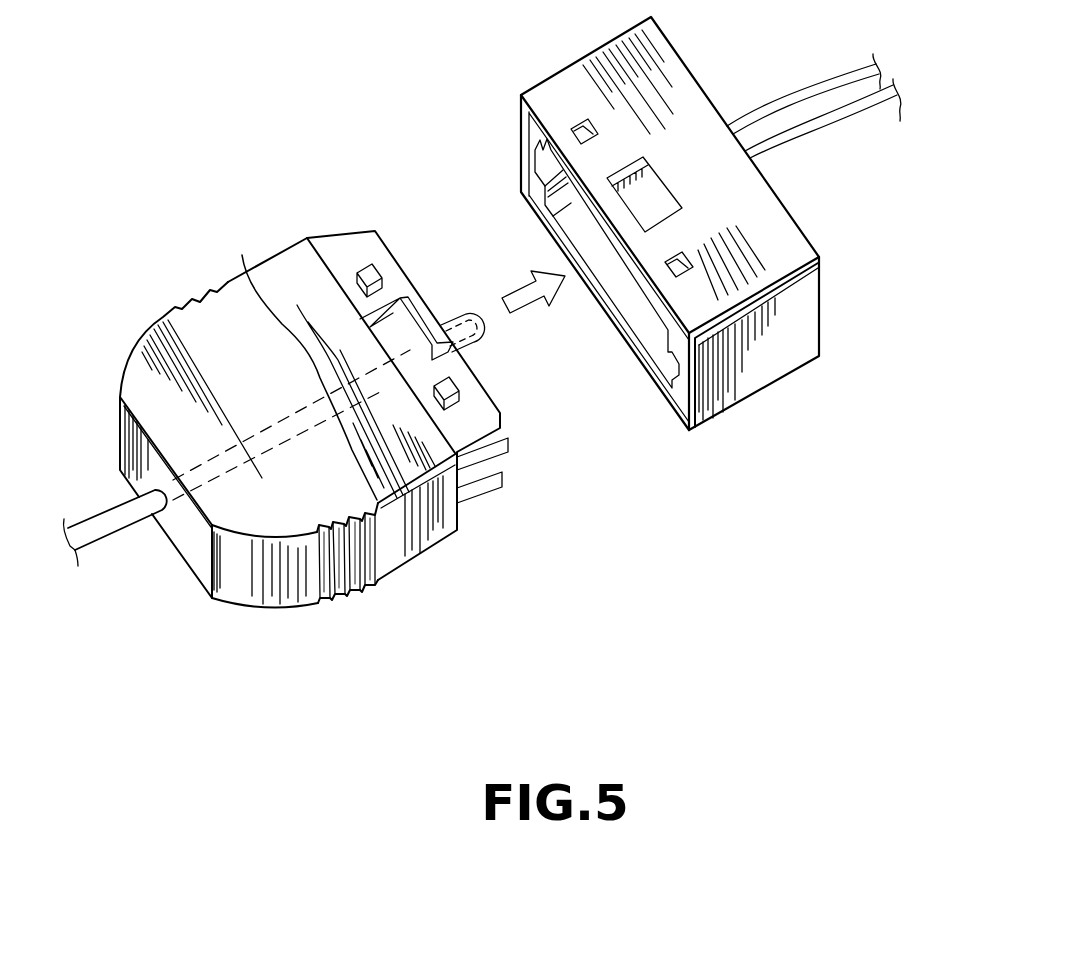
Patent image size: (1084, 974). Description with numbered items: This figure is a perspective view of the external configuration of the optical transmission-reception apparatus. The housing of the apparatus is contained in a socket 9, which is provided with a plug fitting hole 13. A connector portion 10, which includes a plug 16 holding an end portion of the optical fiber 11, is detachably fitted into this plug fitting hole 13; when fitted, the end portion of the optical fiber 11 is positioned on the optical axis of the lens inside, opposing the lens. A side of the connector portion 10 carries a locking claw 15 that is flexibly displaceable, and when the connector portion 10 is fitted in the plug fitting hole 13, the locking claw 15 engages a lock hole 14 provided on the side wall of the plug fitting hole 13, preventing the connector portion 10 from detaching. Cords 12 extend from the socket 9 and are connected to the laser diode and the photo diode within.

The socket 9 is at (733, 378).
The connector portion 10 is at (343, 265).
The optical fiber 11 is at (242, 255).
The cords 12 is at (800, 86).
The plug fitting hole 13 is at (657, 343).
The lock hole 14 is at (652, 212).
The locking claw 15 is at (412, 300).
The plug 16 is at (268, 600).